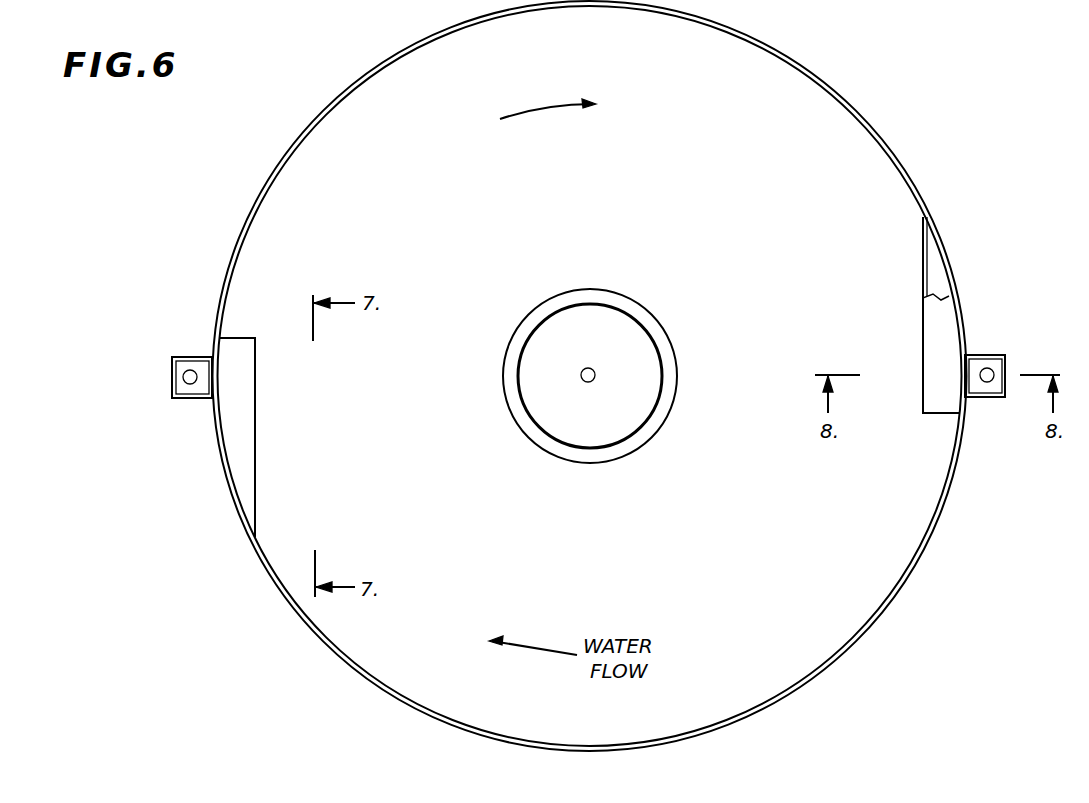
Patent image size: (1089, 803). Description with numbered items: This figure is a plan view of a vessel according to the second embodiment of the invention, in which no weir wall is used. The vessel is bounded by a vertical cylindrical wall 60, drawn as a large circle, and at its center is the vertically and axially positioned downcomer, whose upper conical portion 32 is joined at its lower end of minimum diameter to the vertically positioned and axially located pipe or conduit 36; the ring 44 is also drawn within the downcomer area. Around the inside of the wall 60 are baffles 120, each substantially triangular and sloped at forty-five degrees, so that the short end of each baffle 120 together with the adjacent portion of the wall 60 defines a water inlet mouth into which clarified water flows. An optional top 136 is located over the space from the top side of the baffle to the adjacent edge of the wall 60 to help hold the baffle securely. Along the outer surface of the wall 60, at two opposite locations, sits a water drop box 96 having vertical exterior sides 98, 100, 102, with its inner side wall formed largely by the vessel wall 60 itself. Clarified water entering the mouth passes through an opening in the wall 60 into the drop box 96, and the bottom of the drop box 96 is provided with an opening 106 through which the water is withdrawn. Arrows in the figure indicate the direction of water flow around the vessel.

The vertical cylindrical wall 60 is at (875, 130).
The upper conical portion 32 is at (658, 322).
The hub inner ring 44 is at (606, 318).
The pipe or conduit 36 is at (596, 378).
The top 136 is at (243, 425).
The baffle 120 is at (915, 270).
The water drop box 96 is at (156, 346).
The vertical exterior side 98 is at (197, 398).
The vertical exterior side 100 is at (174, 390).
The vertical exterior side 102 is at (190, 357).
The opening 106 is at (186, 377).